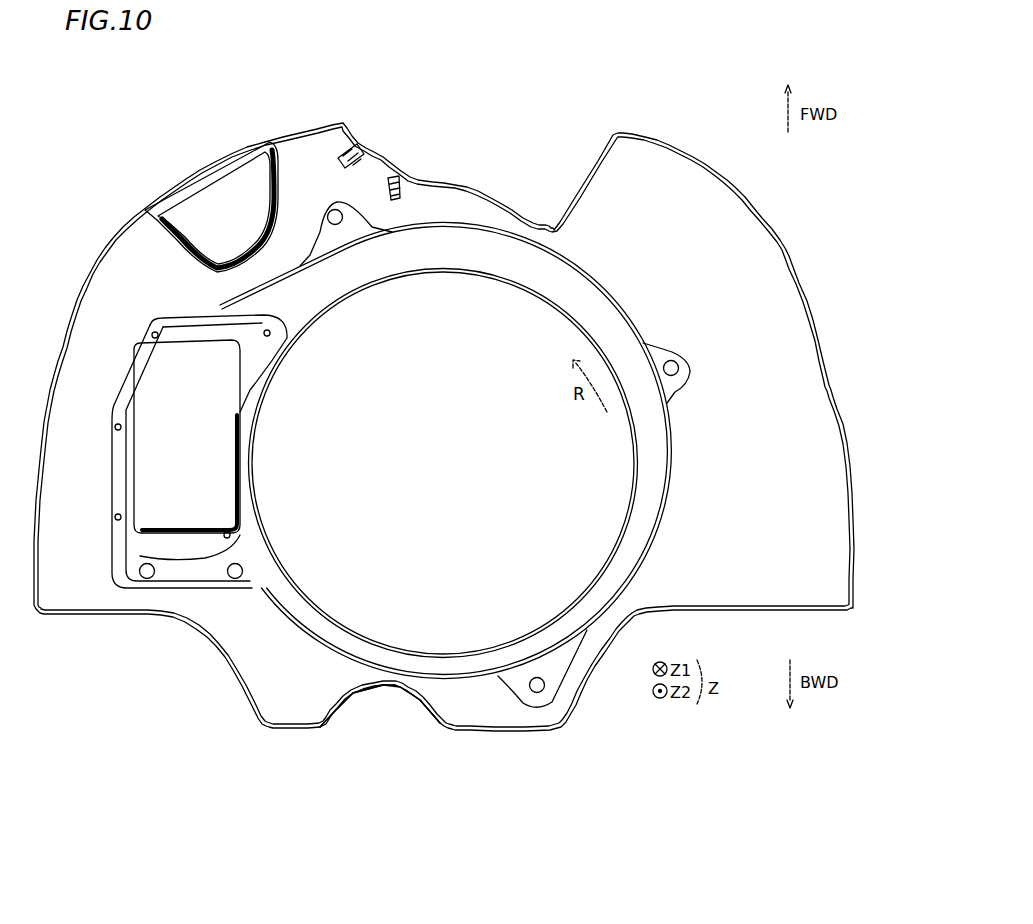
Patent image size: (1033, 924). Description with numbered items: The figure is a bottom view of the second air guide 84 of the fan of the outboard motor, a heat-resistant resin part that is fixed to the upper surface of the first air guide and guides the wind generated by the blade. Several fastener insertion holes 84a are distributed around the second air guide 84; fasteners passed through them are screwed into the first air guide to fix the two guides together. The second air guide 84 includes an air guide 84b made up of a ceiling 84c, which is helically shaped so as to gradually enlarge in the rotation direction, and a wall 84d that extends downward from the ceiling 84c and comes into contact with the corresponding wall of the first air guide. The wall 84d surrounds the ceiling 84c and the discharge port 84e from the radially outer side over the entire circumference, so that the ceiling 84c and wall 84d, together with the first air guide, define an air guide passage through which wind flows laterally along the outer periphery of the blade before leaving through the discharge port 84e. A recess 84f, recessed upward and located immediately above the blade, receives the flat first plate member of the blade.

The second air guide 84 is at (812, 209).
The fastener insertion holes 84a is at (318, 204).
The air guide 84b is at (442, 763).
The ceiling 84c is at (425, 668).
The wall 84d is at (386, 688).
The discharge port 84e is at (152, 378).
The recess 84f is at (603, 478).